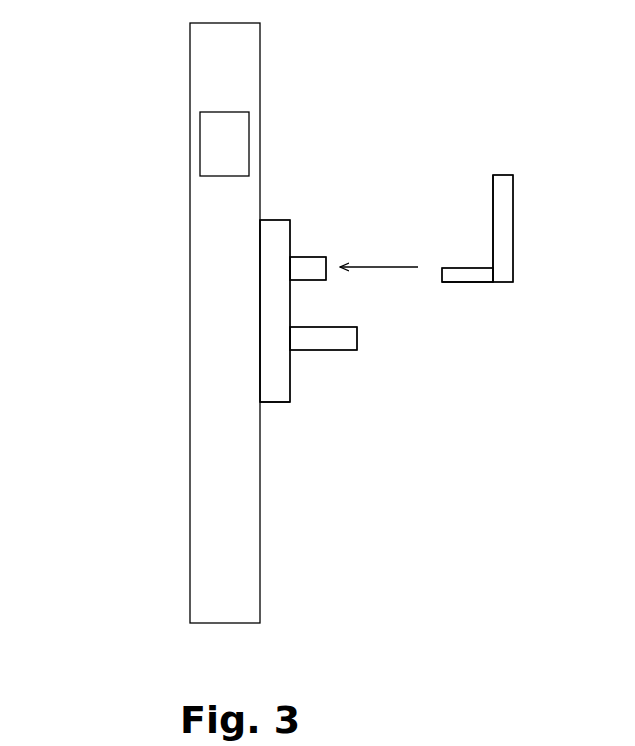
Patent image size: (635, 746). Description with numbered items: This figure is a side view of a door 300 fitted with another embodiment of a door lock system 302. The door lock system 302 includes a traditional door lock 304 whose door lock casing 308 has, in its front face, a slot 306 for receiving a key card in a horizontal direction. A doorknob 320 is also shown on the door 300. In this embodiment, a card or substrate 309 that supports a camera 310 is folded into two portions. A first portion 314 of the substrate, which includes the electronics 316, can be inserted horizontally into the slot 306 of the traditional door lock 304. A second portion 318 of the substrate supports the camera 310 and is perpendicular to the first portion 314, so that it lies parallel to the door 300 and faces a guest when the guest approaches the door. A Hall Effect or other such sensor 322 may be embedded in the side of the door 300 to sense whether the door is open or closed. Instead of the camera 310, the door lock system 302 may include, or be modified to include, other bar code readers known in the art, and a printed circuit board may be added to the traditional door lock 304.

The door 300 is at (213, 83).
The sensor 322 is at (200, 160).
The door lock system 302 is at (278, 203).
The traditional door lock 304 is at (258, 312).
The slot 306 is at (308, 256).
The doorknob 320 is at (323, 350).
The door lock casing 308 is at (276, 404).
The card or substrate 309 is at (515, 163).
The camera 310 is at (515, 228).
The second portion 318 is at (477, 205).
The electronics 316 is at (472, 283).
The first portion 314 is at (458, 290).